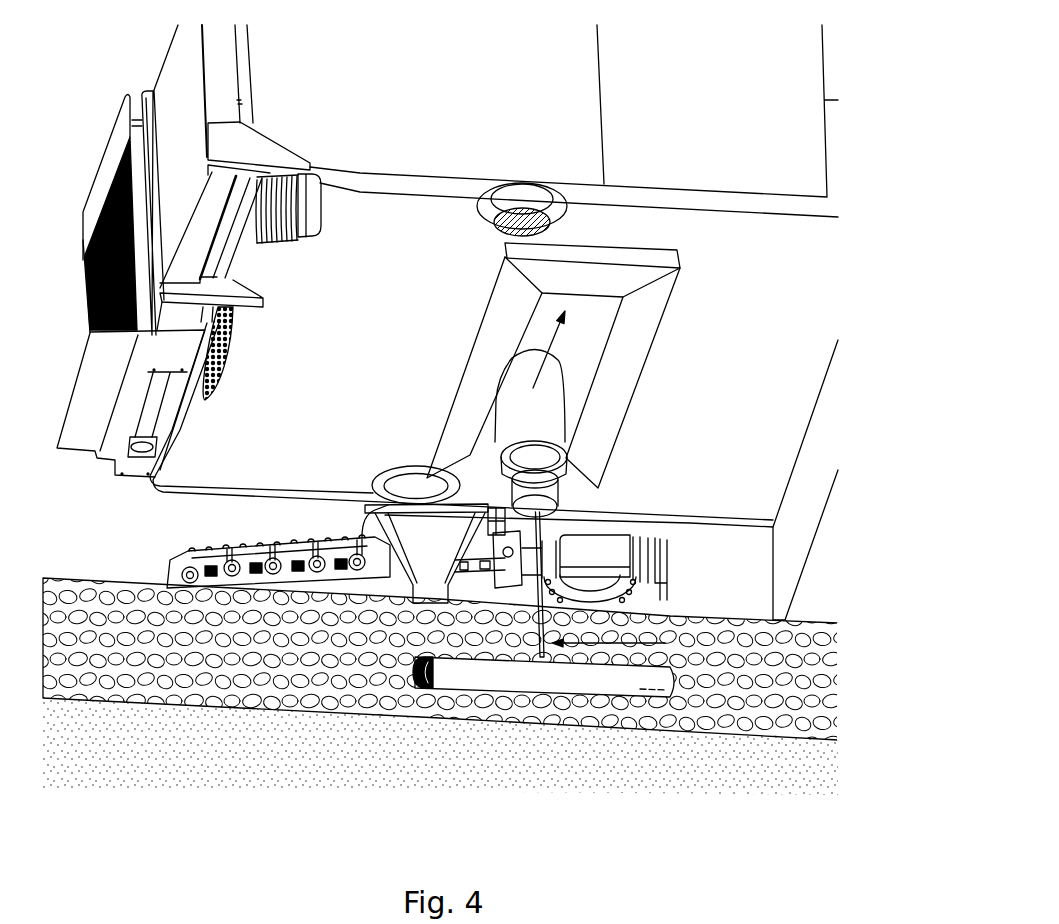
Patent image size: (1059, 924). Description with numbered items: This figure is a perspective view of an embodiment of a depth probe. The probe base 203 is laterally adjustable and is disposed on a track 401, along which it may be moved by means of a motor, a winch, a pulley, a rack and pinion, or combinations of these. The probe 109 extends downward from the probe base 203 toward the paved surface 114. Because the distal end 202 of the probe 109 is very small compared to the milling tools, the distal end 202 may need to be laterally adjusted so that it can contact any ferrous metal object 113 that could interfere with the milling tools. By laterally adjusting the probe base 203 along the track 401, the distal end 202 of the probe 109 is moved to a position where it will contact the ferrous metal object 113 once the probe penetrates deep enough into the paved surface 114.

The track 401 is at (530, 338).
The probe base 203 is at (552, 434).
The probe 109 is at (563, 530).
The paved surface 114 is at (281, 679).
The ferrous metal object 113 is at (515, 706).
The distal end 202 is at (665, 643).